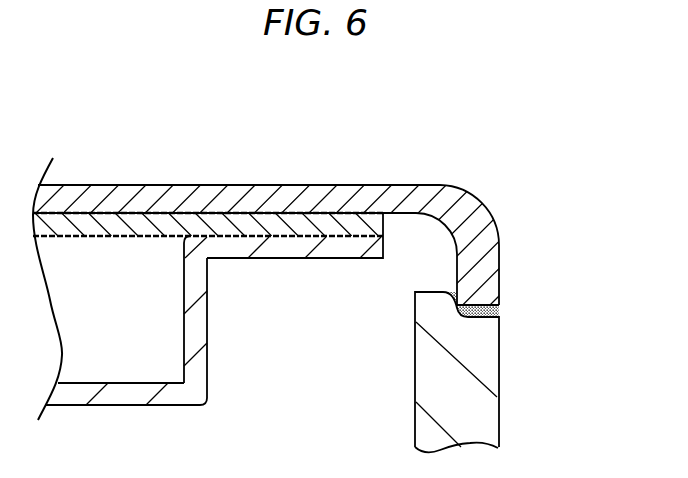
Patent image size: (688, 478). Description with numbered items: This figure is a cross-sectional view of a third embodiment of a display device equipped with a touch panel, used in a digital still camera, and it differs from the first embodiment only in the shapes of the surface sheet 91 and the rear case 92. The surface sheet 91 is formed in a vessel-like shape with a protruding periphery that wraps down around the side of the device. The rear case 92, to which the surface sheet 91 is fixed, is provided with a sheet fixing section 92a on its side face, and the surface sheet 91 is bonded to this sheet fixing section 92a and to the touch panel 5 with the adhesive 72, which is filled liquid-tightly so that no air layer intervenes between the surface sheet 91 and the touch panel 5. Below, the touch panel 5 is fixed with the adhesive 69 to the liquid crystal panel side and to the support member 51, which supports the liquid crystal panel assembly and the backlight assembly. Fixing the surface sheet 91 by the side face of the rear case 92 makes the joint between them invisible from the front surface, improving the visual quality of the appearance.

The touch panel 5 is at (221, 348).
The support member 51 is at (125, 393).
The adhesive 69 is at (139, 238).
The adhesive 72 is at (247, 208).
The surface sheet 91 is at (328, 197).
The rear case 92 is at (509, 372).
The sheet fixing section 92a is at (490, 318).